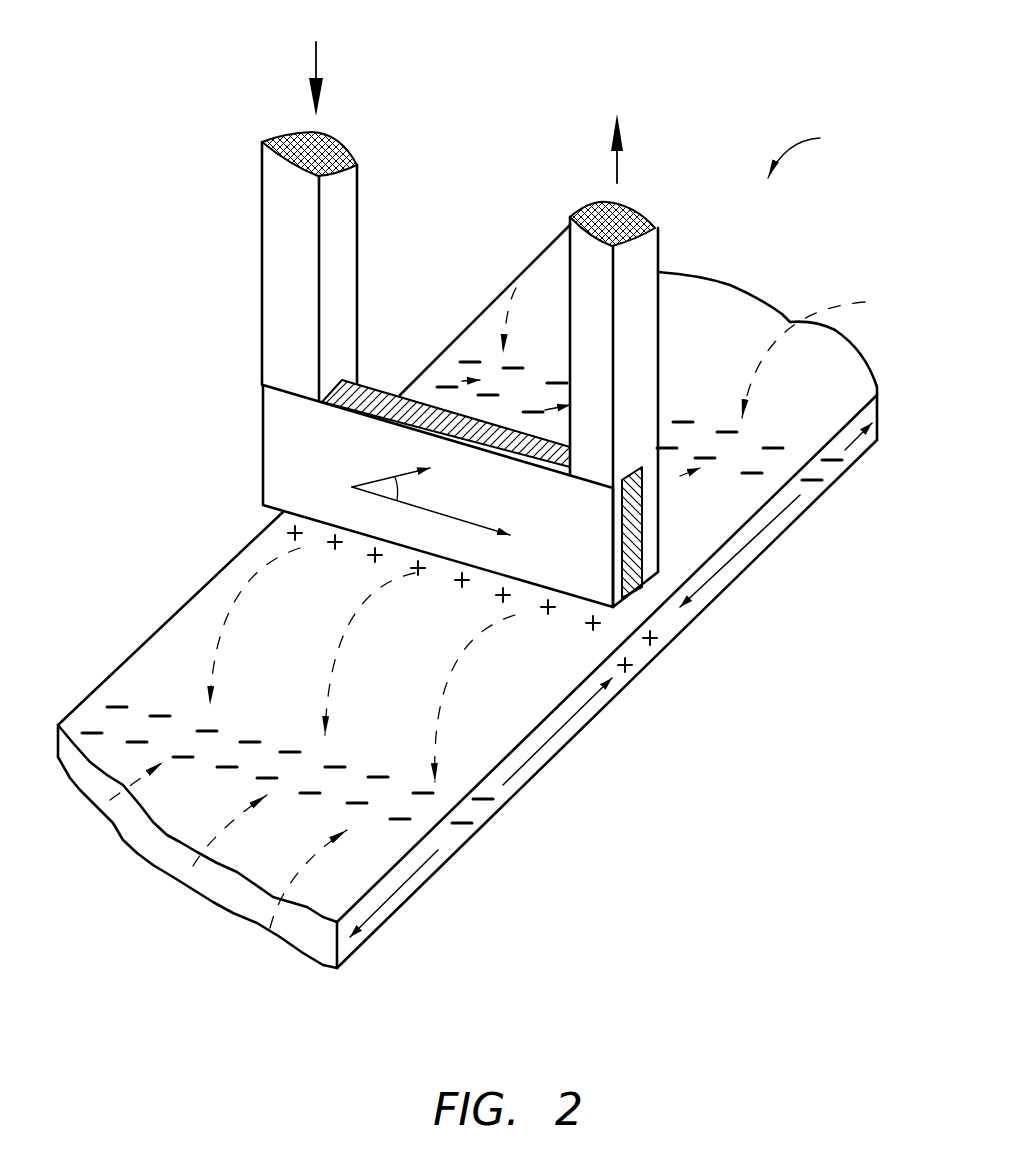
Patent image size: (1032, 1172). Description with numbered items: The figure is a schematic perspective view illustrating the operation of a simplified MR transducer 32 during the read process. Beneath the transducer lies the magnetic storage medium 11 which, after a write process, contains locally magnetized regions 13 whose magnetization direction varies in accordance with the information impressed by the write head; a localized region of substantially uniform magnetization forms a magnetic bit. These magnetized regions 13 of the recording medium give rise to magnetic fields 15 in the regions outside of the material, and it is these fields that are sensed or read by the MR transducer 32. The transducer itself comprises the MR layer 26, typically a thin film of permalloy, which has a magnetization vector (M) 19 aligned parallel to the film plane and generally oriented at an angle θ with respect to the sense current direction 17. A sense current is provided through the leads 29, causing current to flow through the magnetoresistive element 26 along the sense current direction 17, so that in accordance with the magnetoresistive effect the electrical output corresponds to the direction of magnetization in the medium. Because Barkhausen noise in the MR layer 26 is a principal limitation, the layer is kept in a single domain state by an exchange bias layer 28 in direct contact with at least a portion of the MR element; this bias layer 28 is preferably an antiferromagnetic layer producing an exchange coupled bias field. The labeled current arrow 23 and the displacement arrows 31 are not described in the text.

The magnetic storage medium 11 is at (880, 440).
The locally magnetized regions 13 is at (567, 727).
The magnetic fields 15 is at (232, 597).
The sense current direction 17 is at (556, 527).
The magnetization vector (M) 19 is at (388, 478).
The sense current I 23 is at (440, 503).
The MR layer 26 is at (264, 480).
The exchange bias layer 28 is at (365, 395).
The leads 29 is at (570, 237).
The head displacement arrows 31 is at (615, 148).
The MR transducer 32 is at (810, 151).